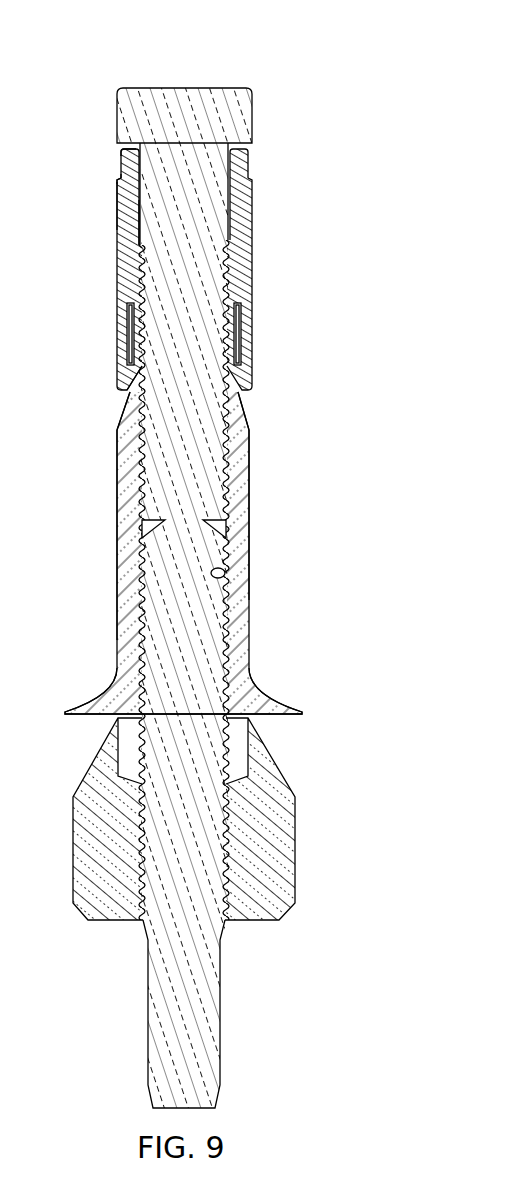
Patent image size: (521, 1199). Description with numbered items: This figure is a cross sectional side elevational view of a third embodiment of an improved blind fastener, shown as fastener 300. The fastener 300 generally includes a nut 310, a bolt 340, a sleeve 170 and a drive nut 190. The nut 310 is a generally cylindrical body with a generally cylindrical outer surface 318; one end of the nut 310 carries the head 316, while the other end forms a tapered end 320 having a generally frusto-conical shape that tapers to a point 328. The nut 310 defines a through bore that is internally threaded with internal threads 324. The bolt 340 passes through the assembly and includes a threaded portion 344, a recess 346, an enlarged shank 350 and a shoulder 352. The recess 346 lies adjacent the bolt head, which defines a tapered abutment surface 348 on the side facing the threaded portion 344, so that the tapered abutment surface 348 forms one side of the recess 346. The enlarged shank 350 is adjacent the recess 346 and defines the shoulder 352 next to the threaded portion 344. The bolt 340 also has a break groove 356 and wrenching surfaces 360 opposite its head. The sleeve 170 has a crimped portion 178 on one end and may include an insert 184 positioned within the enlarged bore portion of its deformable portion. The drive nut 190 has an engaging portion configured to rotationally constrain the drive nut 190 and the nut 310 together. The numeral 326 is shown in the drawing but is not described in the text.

The fastener 300 is at (212, 55).
The bolt 340 is at (198, 97).
The wrenching surfaces 360 is at (215, 990).
The threaded portion 344 is at (130, 338).
The sleeve 170 is at (238, 265).
The tapered abutment surface 348 is at (120, 150).
The recess 346 is at (118, 177).
The crimped portion 178 is at (118, 183).
The enlarged shank 350 is at (137, 236).
The shoulder 352 is at (140, 250).
The point 328 is at (138, 365).
The insert 184 is at (238, 345).
The nut 310 is at (250, 640).
The tapered end 320 is at (248, 423).
The outer surface 318 is at (250, 493).
The head 316 is at (273, 707).
The outer surface of shaft 326 is at (58, 616).
The break groove 356 is at (142, 520).
The internal threads 324 is at (225, 577).
The drive nut 190 is at (275, 886).